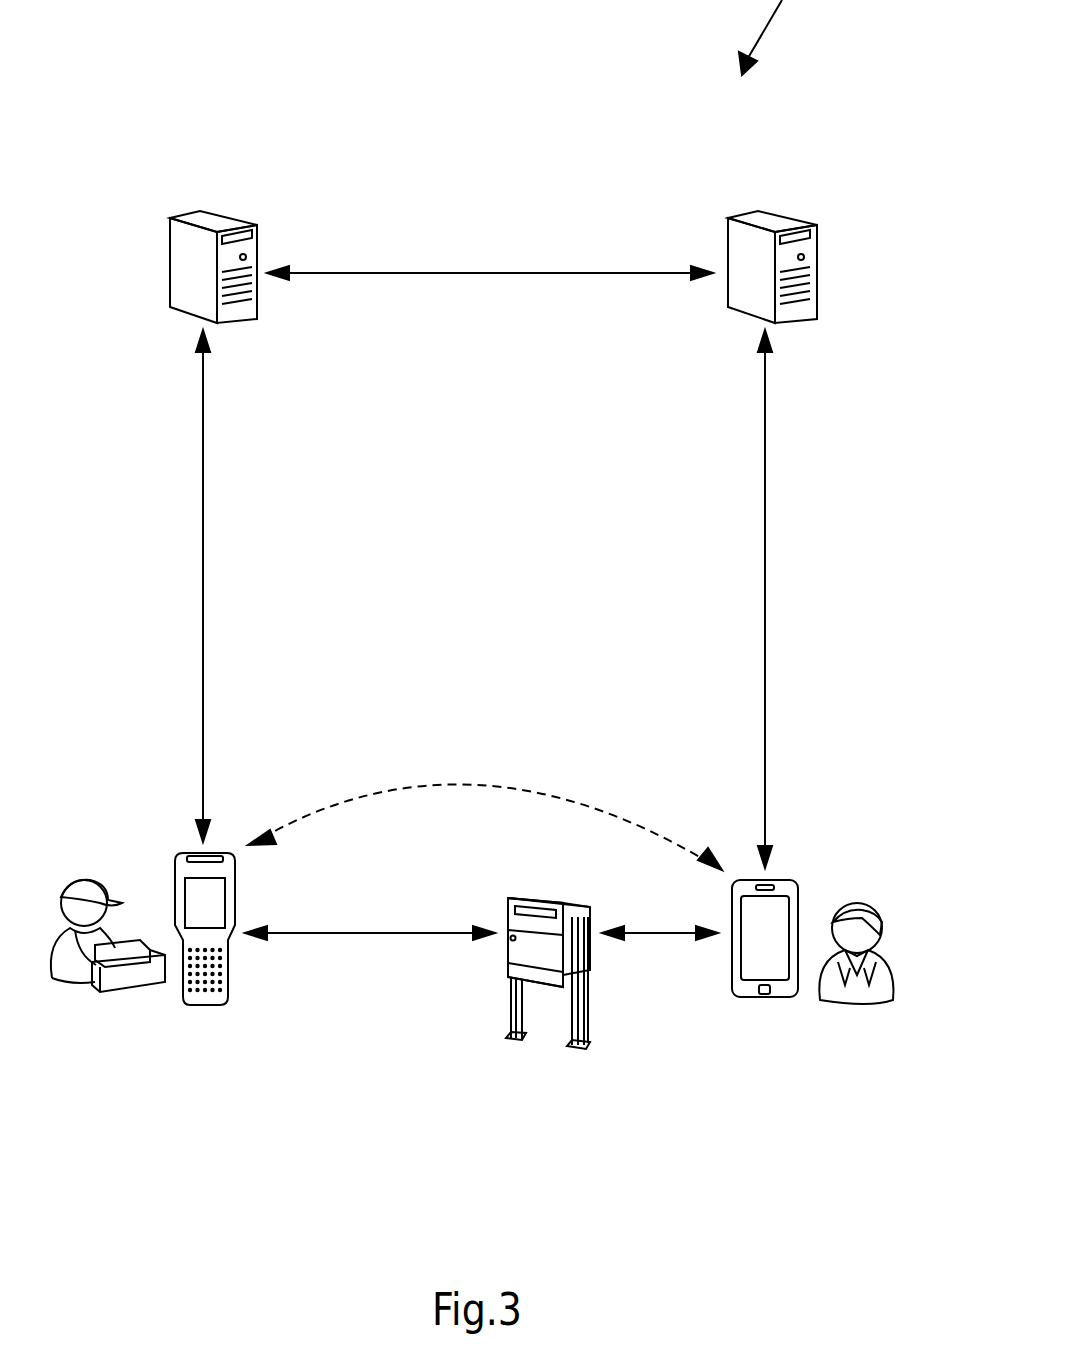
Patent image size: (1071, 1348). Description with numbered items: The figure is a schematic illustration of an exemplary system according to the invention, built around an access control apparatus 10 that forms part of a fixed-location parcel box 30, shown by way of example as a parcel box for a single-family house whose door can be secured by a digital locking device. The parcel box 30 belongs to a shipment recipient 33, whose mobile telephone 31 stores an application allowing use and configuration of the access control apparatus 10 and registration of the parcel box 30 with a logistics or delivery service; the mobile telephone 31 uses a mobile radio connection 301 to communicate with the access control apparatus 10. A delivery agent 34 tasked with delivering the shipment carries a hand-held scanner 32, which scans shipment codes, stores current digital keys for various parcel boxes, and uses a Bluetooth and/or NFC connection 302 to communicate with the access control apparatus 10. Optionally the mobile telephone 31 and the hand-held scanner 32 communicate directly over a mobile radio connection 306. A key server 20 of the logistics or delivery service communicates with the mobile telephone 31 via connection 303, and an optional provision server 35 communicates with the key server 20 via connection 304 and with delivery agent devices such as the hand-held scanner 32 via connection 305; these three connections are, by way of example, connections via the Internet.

The access control apparatus 10 is at (541, 978).
The key server 20 is at (820, 262).
The parcel box 30 is at (548, 901).
The first user apparatus 31 is at (730, 912).
The second user apparatus 32 is at (237, 902).
The shipment recipient 33 is at (860, 903).
The delivery agent 34 is at (76, 874).
The provision server 35 is at (182, 312).
The connection 301 is at (658, 936).
The connection 302 is at (390, 936).
The connection 303 is at (767, 600).
The connection 304 is at (492, 272).
The connection 305 is at (205, 600).
The connection 306 is at (490, 778).